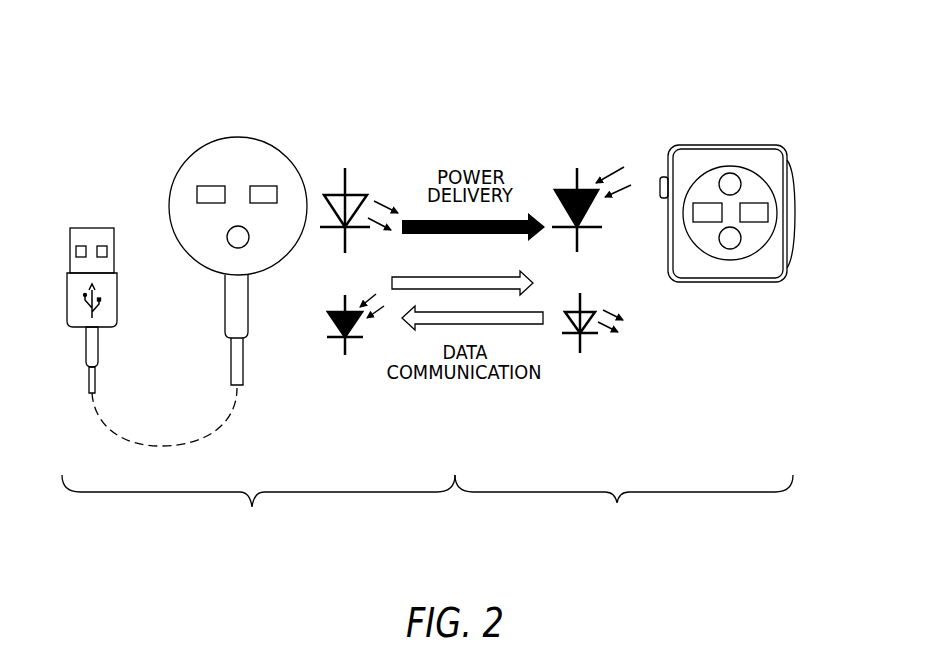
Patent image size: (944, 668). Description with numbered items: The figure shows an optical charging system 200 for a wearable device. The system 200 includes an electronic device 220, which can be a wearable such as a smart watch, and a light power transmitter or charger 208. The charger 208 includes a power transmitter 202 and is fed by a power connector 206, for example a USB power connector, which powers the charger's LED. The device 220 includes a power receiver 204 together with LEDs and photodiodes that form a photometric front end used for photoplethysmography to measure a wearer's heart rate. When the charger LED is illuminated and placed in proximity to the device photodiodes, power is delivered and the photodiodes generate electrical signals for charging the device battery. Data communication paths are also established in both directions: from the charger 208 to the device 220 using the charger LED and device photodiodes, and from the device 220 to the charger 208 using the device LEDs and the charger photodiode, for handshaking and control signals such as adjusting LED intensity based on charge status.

The optical charging system 200 is at (789, 56).
The power transmitter 202 is at (292, 541).
The power receiver 204 is at (653, 542).
The power connector 206 is at (88, 228).
The light power transmitter (charger) 208 is at (207, 144).
The electronic device 220 is at (786, 283).